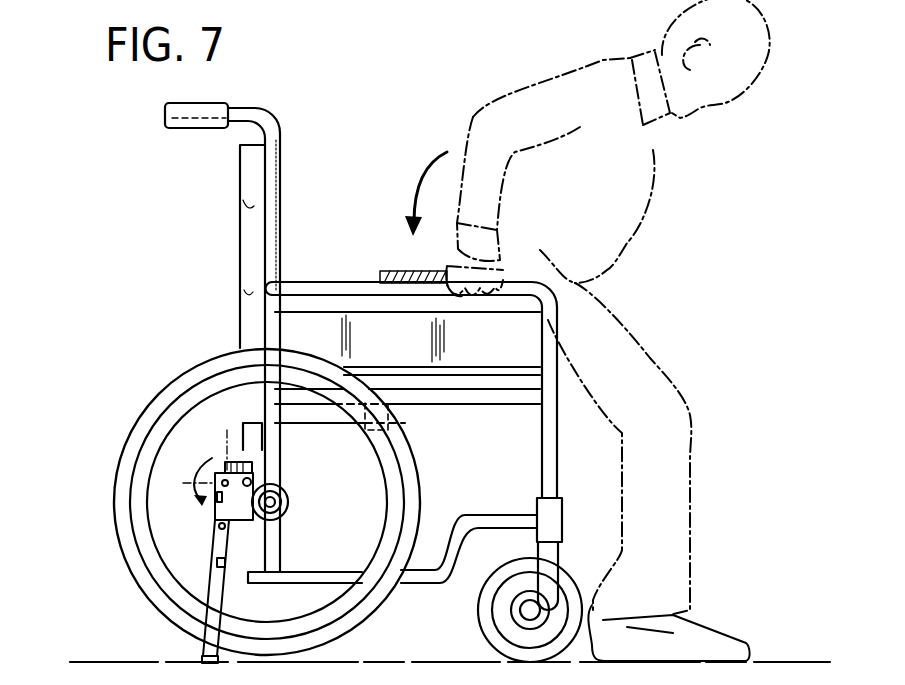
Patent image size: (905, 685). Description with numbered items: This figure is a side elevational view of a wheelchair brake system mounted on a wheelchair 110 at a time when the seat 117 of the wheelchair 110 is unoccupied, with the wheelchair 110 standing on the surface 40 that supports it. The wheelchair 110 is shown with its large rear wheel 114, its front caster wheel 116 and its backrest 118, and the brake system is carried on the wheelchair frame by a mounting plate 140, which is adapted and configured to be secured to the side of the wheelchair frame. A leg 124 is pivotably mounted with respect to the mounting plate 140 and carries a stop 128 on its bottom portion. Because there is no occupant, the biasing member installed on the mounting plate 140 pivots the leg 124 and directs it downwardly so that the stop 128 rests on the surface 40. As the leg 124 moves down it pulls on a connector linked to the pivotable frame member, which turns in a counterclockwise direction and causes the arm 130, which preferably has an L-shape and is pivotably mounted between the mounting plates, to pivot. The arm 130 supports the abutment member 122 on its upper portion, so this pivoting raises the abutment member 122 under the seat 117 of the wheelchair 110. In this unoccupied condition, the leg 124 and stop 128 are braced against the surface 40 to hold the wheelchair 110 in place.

The surface 40 is at (78, 652).
The wheelchair 110 is at (208, 171).
The rear wheel 114 is at (168, 393).
The front caster wheel 116 is at (479, 627).
The seat 117 is at (515, 416).
The backrest 118 is at (243, 252).
The abutment member 122 is at (415, 407).
The leg 124 is at (215, 597).
The stop 128 is at (198, 661).
The arm 130 is at (329, 425).
The mounting plate 140 is at (226, 509).